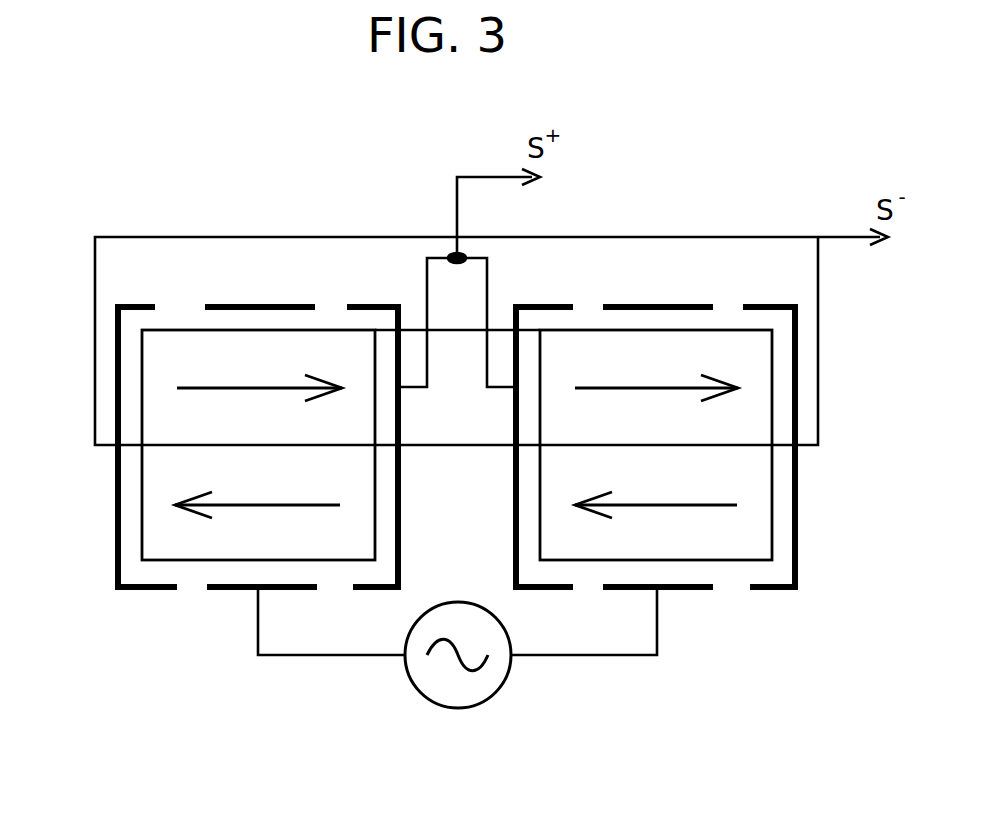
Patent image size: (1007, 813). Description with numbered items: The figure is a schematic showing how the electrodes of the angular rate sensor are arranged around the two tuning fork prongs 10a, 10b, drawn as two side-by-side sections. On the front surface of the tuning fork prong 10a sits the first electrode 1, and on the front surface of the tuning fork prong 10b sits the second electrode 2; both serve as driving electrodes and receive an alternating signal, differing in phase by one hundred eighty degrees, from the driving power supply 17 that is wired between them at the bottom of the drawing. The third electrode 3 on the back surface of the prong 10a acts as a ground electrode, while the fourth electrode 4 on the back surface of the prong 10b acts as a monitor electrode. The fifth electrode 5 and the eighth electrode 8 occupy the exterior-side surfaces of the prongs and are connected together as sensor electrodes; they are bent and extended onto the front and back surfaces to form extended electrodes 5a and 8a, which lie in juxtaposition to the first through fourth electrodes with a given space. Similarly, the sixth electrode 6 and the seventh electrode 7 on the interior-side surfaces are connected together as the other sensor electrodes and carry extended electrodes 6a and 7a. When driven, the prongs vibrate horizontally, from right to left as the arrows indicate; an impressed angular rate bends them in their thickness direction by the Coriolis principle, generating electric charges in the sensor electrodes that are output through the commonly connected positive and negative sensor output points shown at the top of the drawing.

The first electrode 1 is at (235, 590).
The second electrode 2 is at (638, 587).
The third electrode 3 is at (275, 305).
The fourth electrode 4 is at (636, 305).
The fifth electrode 5 is at (113, 488).
The extended electrode 5a is at (150, 307).
The sixth electrode 6 is at (402, 488).
The extended electrode 6a is at (360, 303).
The seventh electrode 7 is at (513, 503).
The extended electrode 7a is at (540, 303).
The eighth electrode 8 is at (798, 515).
The extended electrode 8a is at (773, 300).
The tuning fork prong 10a is at (165, 362).
The tuning fork prong 10b is at (713, 345).
The driving power supply 17 is at (430, 698).